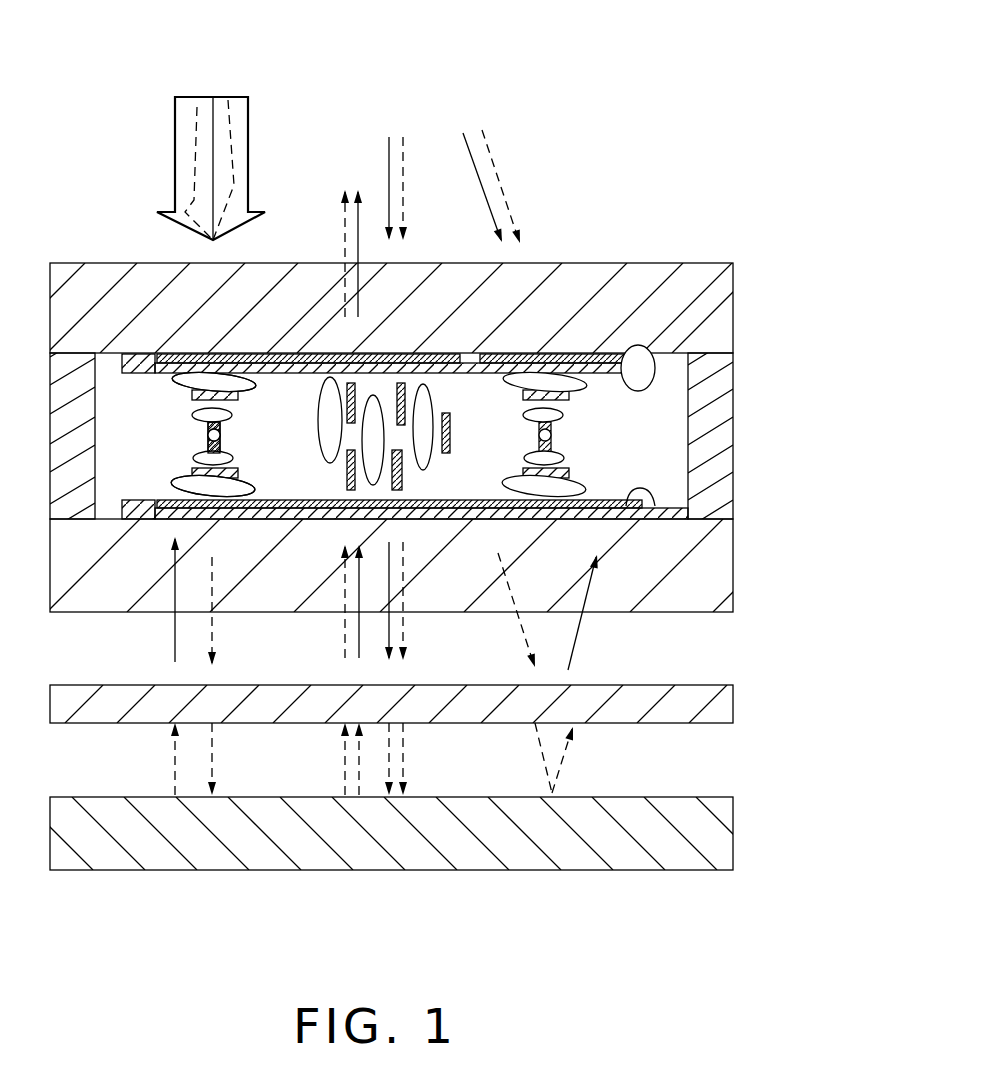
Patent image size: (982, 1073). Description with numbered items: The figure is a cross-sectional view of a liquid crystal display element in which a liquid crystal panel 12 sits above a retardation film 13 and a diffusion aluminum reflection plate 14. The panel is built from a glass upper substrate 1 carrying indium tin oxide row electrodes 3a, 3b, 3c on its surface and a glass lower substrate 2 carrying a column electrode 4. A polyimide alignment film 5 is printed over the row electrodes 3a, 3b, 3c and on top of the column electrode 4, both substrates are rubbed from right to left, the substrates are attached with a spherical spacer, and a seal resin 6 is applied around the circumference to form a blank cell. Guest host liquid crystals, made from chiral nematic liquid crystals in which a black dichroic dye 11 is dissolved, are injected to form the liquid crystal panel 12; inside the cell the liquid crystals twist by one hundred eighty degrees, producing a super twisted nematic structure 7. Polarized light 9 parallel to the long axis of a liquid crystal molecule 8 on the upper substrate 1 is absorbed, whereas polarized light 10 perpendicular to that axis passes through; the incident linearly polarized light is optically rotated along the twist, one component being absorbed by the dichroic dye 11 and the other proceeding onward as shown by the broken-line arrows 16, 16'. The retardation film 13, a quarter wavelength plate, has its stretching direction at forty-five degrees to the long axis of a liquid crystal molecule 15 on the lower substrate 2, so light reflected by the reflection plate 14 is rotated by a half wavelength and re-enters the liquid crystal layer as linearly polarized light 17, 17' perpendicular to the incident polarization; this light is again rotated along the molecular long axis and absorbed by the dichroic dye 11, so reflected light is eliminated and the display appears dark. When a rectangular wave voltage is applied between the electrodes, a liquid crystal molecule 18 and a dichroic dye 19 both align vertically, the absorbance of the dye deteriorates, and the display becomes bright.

The upper substrate 1 is at (712, 318).
The lower substrate 2 is at (712, 568).
The row electrode 3a is at (200, 358).
The row electrode 3b is at (428, 354).
The row electrode 3c is at (576, 353).
The column electrode 4 is at (720, 513).
The polyimide alignment film 5 is at (648, 362).
The seal resin 6 is at (62, 438).
The super twisted nematic structure 7 is at (156, 375).
The liquid crystal molecule 8 is at (230, 352).
The polarized light 9 is at (248, 108).
The polarized light 10 is at (212, 120).
The dichroic dye 11 is at (242, 384).
The liquid crystal panel 12 is at (822, 617).
The retardation film 13 is at (718, 704).
The diffusion aluminum reflection plate 14 is at (718, 828).
The liquid crystal molecule 15 is at (258, 518).
The arrow 16 is at (256, 618).
The arrow 16' is at (496, 613).
The linearly polarized light 17 is at (121, 604).
The linearly polarized light 17' is at (607, 613).
The liquid crystal molecule 18 is at (405, 478).
The dichroic dye 19 is at (452, 418).